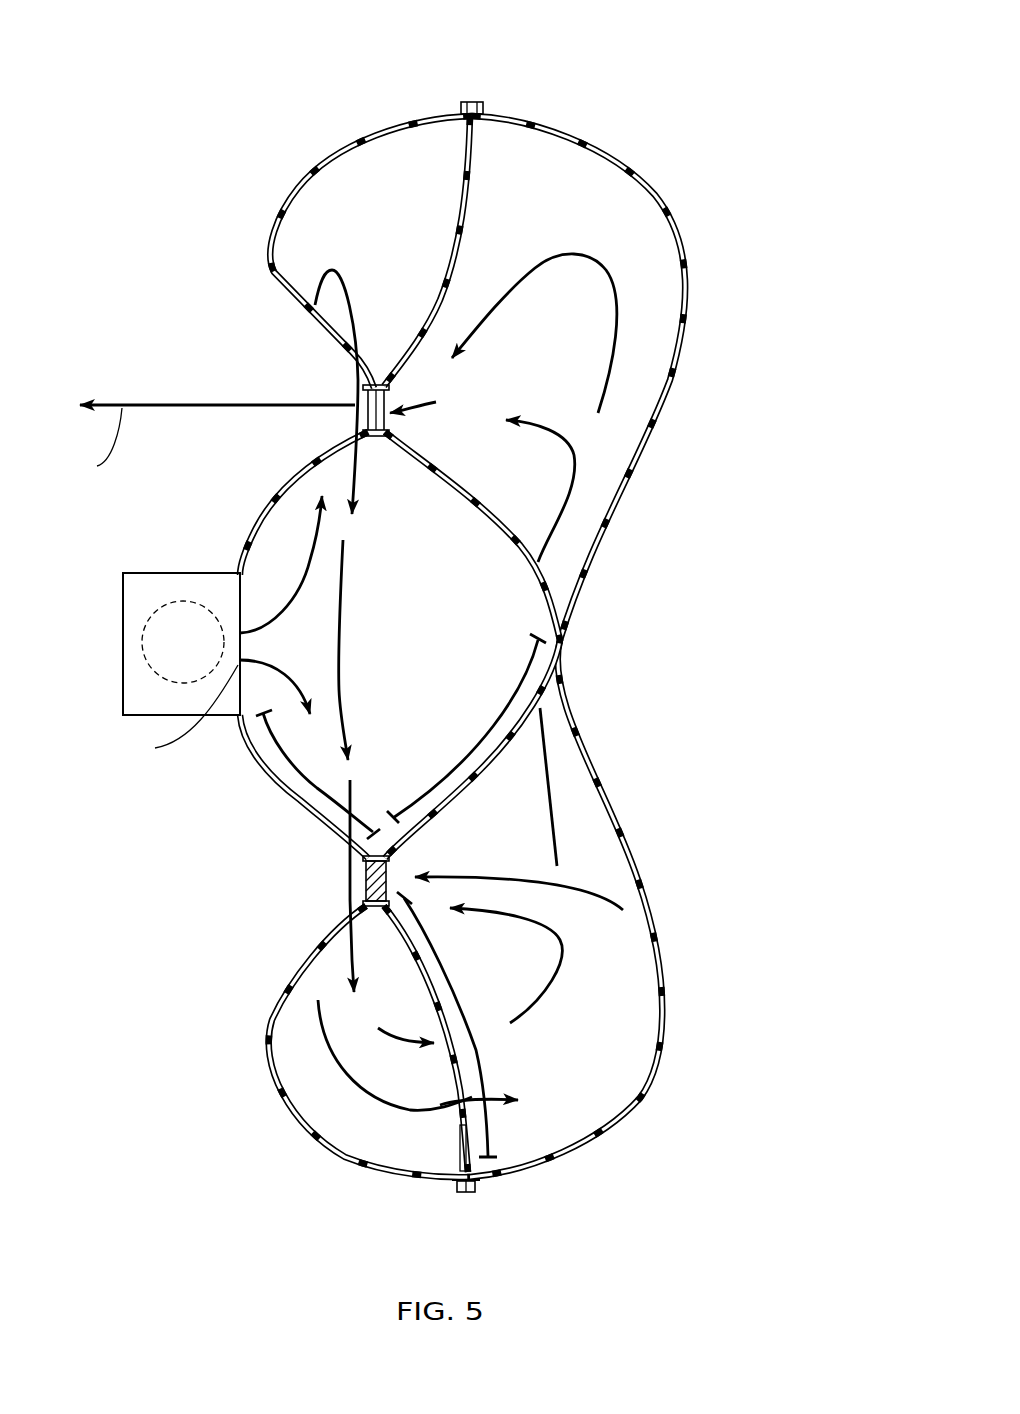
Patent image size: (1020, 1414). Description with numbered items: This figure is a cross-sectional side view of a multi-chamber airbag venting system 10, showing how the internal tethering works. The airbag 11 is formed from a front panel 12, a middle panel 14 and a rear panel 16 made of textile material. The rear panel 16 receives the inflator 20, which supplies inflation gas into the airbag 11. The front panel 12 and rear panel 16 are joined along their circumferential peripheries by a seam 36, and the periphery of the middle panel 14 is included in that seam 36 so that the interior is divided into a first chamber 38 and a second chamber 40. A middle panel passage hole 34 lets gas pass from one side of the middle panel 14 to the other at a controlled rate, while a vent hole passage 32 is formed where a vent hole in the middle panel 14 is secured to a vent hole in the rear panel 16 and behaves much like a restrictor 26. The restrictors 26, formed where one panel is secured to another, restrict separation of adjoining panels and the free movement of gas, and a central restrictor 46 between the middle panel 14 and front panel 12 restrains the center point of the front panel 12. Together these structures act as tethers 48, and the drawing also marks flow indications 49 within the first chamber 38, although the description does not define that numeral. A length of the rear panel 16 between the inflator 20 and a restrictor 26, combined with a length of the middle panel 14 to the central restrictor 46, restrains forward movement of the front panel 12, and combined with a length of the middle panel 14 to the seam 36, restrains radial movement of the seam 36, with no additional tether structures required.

The multi-chamber airbag venting system 10 is at (740, 378).
The airbag 11 is at (662, 157).
The front panel 12 is at (673, 212).
The middle panel 14 is at (470, 203).
The rear panel 16 is at (360, 140).
The inflator 20 is at (152, 603).
The restrictor 26 is at (362, 888).
The vent hole passage 32 is at (365, 400).
The middle panel passage hole 34 is at (460, 1097).
The seam 36 is at (486, 109).
The first chamber 38 is at (318, 680).
The second chamber 40 is at (506, 679).
The central restrictor 46 is at (568, 645).
The tether 48 is at (390, 333).
The flow path 49 is at (397, 488).